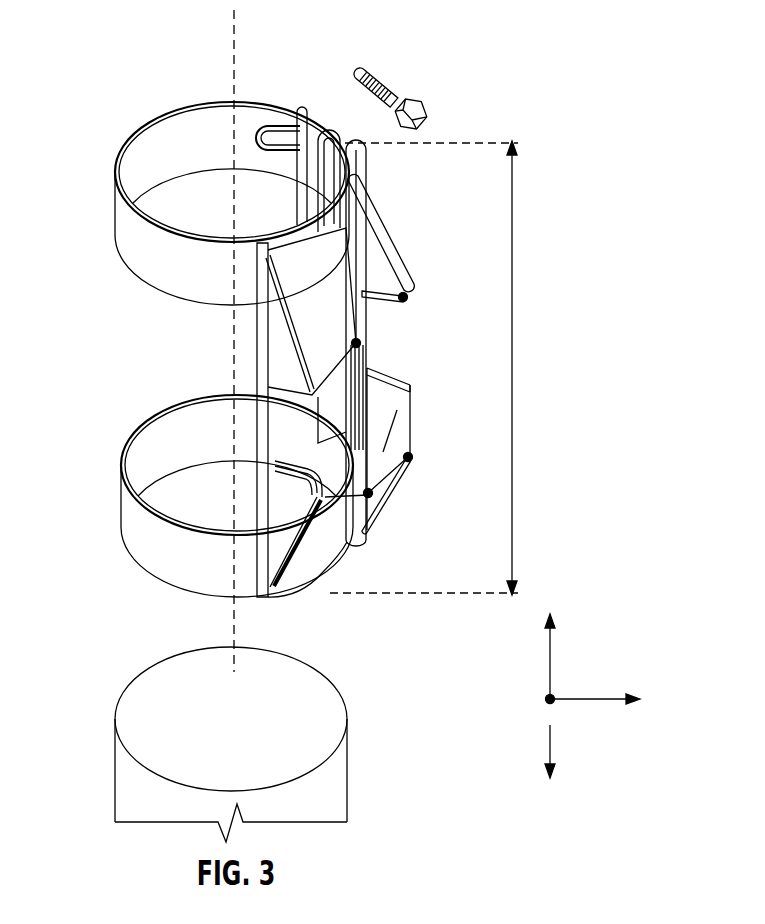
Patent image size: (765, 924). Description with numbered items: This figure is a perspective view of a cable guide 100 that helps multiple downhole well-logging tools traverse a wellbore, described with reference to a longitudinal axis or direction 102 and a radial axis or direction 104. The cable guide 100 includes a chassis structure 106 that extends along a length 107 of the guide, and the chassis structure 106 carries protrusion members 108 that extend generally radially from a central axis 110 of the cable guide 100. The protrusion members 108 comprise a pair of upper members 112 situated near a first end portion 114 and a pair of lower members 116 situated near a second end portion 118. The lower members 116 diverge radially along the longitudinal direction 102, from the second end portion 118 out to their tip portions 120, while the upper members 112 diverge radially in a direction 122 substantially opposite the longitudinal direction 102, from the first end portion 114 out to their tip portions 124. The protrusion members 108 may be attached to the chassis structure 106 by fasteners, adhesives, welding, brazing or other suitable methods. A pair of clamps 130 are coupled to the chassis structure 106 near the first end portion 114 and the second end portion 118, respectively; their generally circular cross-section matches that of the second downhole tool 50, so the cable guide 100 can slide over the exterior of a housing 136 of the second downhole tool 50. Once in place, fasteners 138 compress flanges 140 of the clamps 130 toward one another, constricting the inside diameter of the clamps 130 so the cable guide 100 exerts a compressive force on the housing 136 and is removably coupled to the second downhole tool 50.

The second downhole tool 50 is at (332, 800).
The cable guide 100 is at (416, 72).
The longitudinal axis or direction 102 is at (552, 657).
The radial axis or direction 104 is at (592, 698).
The chassis structure 106 is at (292, 437).
The length 107 is at (514, 372).
The protrusion members 108 is at (308, 289).
The central axis 110 is at (235, 35).
The upper members 112 is at (411, 283).
The first end portion 114 is at (157, 105).
The lower members 116 is at (411, 457).
The second end portion 118 is at (137, 649).
The tip portions 120 is at (345, 458).
The direction 122 is at (552, 742).
The tip portions 124 is at (412, 298).
The clamps 130 is at (142, 150).
The housing 136 is at (342, 765).
The fasteners 138 is at (406, 100).
The flanges 140 is at (333, 130).